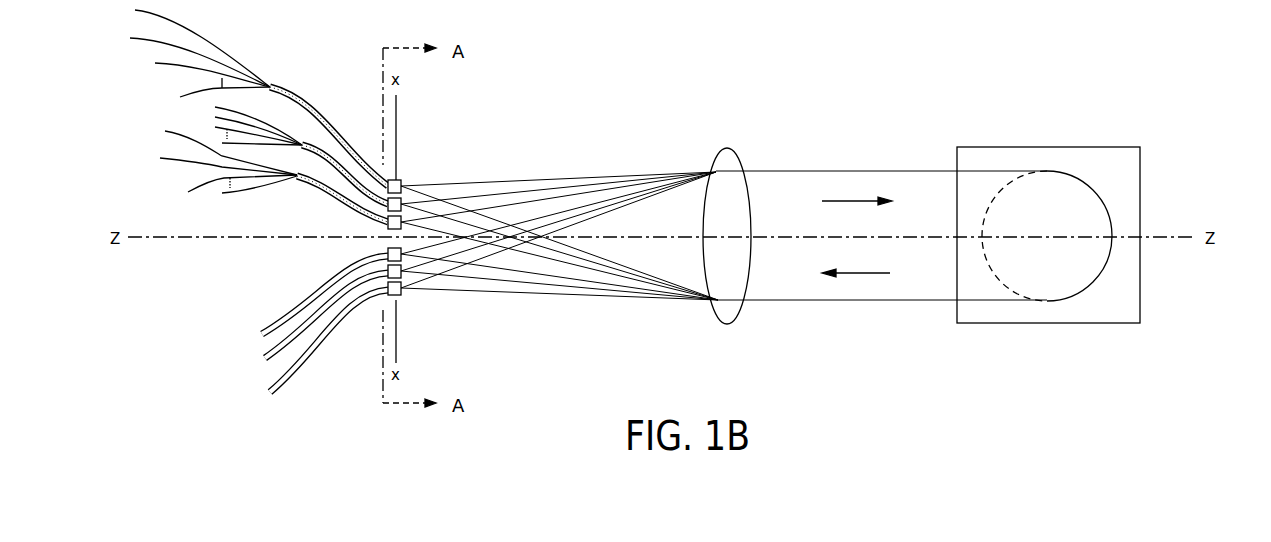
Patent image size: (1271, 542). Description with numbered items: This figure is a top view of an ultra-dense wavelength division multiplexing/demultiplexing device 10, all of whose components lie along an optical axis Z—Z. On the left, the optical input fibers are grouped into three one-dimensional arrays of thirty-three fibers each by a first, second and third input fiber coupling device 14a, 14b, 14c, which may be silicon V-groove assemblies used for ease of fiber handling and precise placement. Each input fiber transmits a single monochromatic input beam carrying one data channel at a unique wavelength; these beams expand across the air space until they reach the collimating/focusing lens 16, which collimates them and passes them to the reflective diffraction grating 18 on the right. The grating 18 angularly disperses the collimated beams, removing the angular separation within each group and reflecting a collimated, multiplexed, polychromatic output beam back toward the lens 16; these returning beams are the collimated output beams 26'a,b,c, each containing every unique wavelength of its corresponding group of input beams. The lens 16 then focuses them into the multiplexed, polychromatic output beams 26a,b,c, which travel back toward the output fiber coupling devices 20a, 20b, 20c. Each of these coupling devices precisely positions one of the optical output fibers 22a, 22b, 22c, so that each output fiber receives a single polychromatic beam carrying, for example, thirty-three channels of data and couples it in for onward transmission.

The ultra-dense wavelength division multiplexing/demultiplexing device 10 is at (940, 353).
The first input fiber coupling device 14a is at (395, 180).
The second input fiber coupling device 14b is at (398, 198).
The third input fiber coupling device 14c is at (400, 218).
The collimating/focusing lens 16 is at (737, 192).
The reflective diffraction grating 18 is at (1105, 152).
The output fiber coupling device 20a is at (402, 292).
The output fiber coupling device 20b is at (402, 276).
The output fiber coupling device 20c is at (402, 260).
The optical output fiber 22a is at (275, 391).
The optical output fiber 22b is at (272, 358).
The optical output fiber 22c is at (270, 333).
The multiplexed polychromatic optical output beams 26a,b,c is at (580, 310).
The collimated multiplexed polychromatic optical output beams 26'a,b,c is at (858, 309).